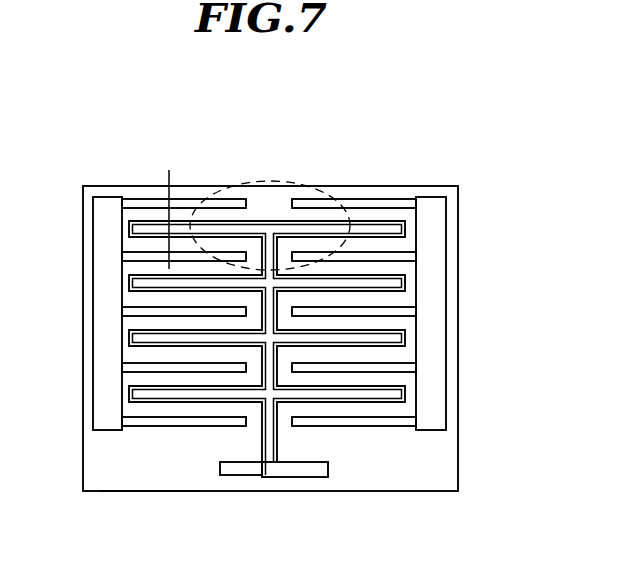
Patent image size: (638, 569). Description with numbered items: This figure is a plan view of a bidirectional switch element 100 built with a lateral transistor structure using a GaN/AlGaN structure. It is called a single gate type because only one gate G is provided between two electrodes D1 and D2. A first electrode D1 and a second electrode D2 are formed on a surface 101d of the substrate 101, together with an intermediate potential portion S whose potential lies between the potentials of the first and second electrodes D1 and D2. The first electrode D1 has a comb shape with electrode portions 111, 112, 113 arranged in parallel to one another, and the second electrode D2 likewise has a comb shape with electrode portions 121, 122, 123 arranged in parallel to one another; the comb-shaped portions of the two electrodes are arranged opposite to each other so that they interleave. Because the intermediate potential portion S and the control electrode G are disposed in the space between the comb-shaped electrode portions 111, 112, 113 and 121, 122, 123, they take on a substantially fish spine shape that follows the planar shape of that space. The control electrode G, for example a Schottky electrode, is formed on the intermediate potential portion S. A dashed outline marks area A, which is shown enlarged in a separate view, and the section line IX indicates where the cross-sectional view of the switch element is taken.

The bidirectional switch element 100 is at (275, 102).
The substrate 101 is at (458, 460).
The surface 101d is at (132, 468).
The electrode portion 111 is at (140, 203).
The electrode portion 112 is at (140, 253).
The electrode portion 113 is at (140, 310).
The electrode portion 121 is at (400, 193).
The electrode portion 122 is at (400, 253).
The electrode portion 123 is at (400, 307).
The first electrode D1 is at (100, 405).
The second electrode D2 is at (433, 393).
The control electrode G is at (237, 468).
The intermediate potential portion S is at (302, 468).
The area A is at (287, 181).
The line IX- IX is at (143, 170).